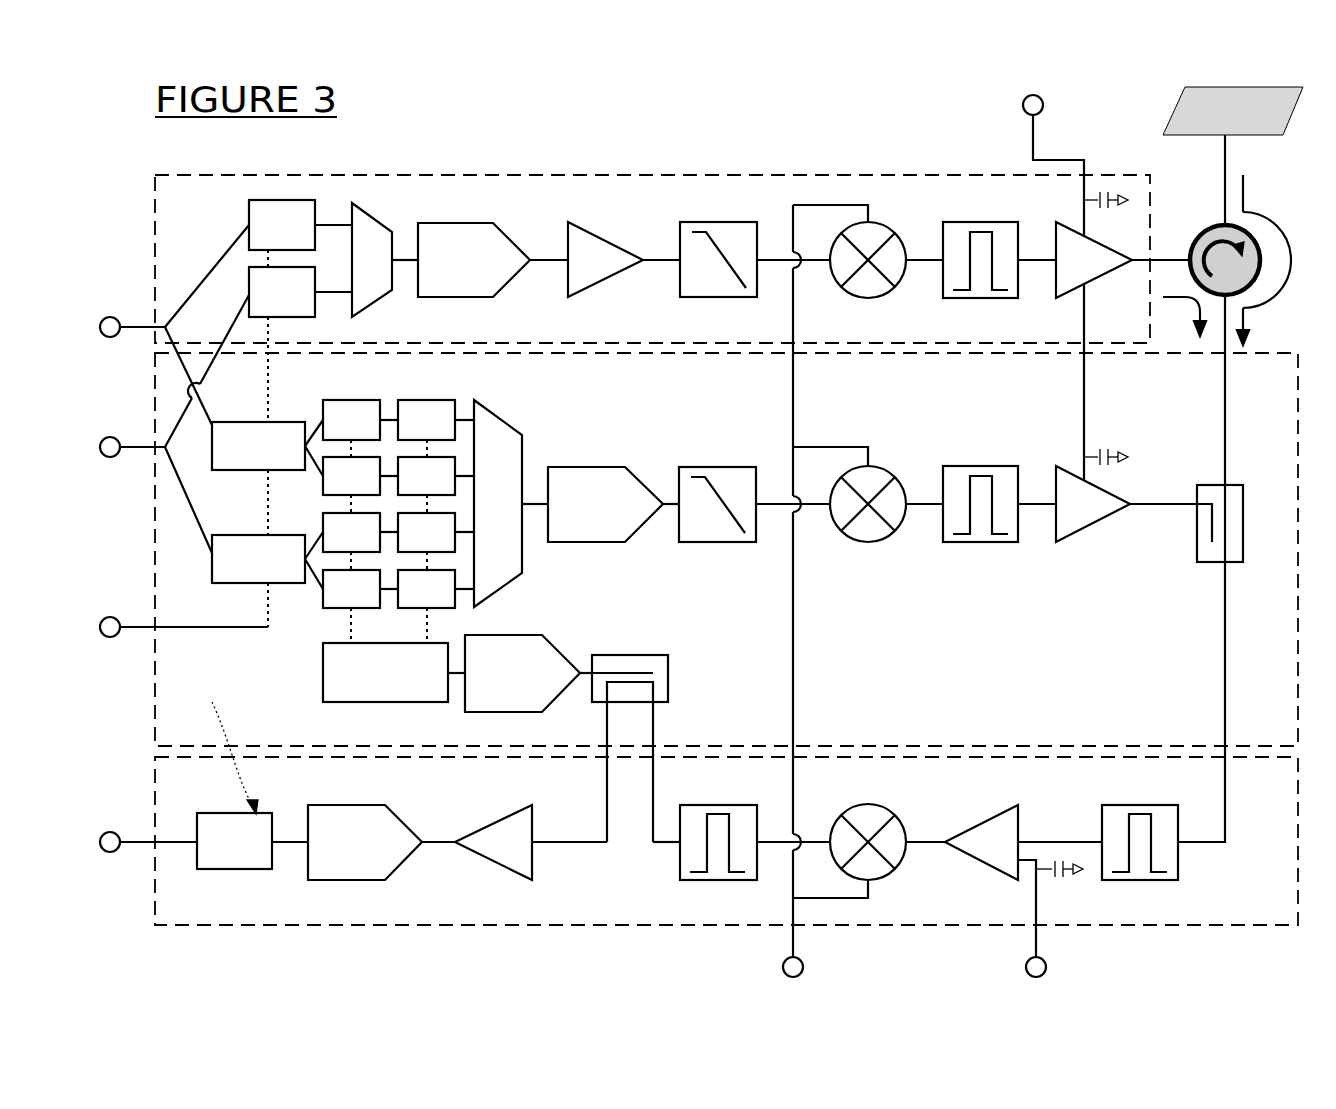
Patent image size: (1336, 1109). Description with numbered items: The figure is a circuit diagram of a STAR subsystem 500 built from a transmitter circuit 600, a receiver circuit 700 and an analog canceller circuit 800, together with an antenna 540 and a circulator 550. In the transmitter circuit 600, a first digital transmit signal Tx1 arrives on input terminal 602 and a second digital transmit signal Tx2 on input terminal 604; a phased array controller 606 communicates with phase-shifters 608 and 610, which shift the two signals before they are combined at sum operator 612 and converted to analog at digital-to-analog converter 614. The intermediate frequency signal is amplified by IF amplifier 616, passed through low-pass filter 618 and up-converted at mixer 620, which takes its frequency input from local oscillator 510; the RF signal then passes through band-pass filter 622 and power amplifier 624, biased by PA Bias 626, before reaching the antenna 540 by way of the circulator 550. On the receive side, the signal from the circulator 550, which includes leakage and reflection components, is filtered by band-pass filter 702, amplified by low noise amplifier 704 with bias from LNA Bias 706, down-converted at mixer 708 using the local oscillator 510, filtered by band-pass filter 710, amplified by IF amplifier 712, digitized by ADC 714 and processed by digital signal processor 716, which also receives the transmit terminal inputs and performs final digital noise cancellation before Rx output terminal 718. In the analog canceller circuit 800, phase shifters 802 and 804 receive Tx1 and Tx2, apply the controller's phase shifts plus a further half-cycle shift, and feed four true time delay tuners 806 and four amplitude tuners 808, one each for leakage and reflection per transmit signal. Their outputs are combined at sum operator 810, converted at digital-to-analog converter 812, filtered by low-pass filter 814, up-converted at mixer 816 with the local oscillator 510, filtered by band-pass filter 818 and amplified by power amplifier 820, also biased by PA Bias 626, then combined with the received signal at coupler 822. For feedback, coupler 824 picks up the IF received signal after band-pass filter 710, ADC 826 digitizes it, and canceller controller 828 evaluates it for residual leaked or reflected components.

The STAR subsystem 500 is at (737, 137).
The local oscillator 510 is at (783, 967).
The antenna 540 is at (1197, 90).
The circulator 550 is at (1205, 230).
The transmitter circuit 600 is at (681, 209).
The input terminal 602 is at (110, 317).
The input terminal 604 is at (110, 437).
The phased array controller 606 is at (110, 617).
The phase-shifter 608 is at (249, 212).
The phase-shifter 610 is at (249, 290).
The sum operator 612 is at (378, 222).
The digital-to-analog converter 614 is at (462, 222).
The IF amplifier 616 is at (588, 290).
The low-pass filter 618 is at (700, 297).
The mixer 620 is at (862, 224).
The band-pass filter 622 is at (958, 298).
The power amplifier 624 is at (1065, 296).
The PA Bias 626 is at (1023, 107).
The receiver circuit 700 is at (1276, 914).
The band-pass filter 702 is at (1132, 805).
The low noise amplifier 704 is at (1000, 812).
The LNA Bias 706 is at (1026, 967).
The mixer 708 is at (898, 878).
The band-pass filter 710 is at (680, 862).
The IF amplifier 712 is at (512, 872).
The ADC 714 is at (372, 881).
The digital signal processor 716 is at (263, 870).
The Rx output terminal 718 is at (110, 832).
The analog canceller circuit 800 is at (739, 401).
The phase shifter 802 is at (262, 471).
The phase shifter 804 is at (262, 584).
The true time delay tuners 806 is at (335, 486).
The amplitude tuners 808 is at (447, 486).
The sum operator 810 is at (512, 576).
The digital-to-analog converter 812 is at (586, 542).
The low-pass filter 814 is at (700, 542).
The mixer 816 is at (853, 538).
The band-pass filter 818 is at (962, 543).
The power amplifier 820 is at (1072, 525).
The coupler 822 is at (1205, 563).
The coupler 824 is at (655, 655).
The ADC 826 is at (548, 638).
The canceller controller 828 is at (323, 665).